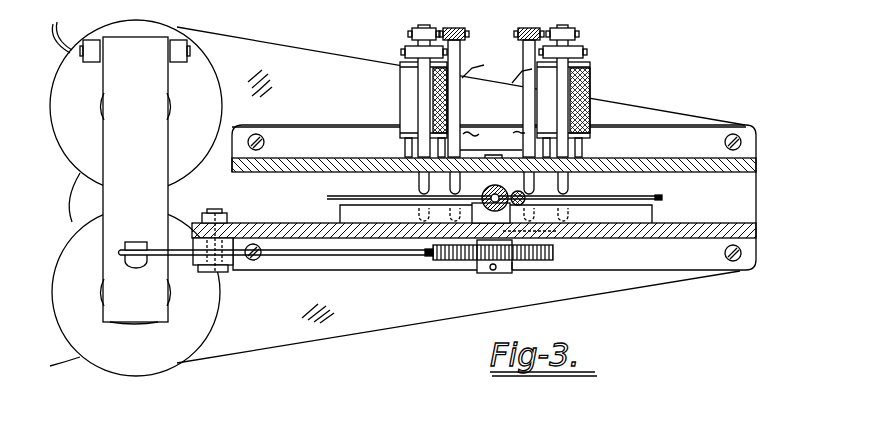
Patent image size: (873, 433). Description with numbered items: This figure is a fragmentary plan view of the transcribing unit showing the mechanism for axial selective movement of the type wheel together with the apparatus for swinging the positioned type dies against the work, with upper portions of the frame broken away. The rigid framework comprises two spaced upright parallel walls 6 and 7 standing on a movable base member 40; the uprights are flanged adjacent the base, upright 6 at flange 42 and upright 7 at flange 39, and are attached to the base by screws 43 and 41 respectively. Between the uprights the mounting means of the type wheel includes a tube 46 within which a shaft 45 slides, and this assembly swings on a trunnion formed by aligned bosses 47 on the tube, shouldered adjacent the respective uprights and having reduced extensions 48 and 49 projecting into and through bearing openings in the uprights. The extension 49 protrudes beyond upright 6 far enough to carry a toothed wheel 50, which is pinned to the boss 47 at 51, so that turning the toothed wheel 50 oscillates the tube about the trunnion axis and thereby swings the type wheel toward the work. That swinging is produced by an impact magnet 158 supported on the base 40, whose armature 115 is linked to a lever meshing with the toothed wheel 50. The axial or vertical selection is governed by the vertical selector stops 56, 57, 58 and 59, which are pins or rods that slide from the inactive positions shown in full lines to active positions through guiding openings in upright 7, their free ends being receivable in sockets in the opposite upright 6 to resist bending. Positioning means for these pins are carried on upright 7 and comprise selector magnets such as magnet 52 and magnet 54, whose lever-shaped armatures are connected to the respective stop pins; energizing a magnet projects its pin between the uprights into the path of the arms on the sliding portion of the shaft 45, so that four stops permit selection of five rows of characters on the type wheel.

The impact magnet 158 is at (133, 25).
The armature 115 is at (163, 142).
The base member 40 is at (297, 63).
The screws 41 is at (258, 137).
The flange 42 is at (612, 265).
The screws 43 is at (254, 261).
The upright wall 7 is at (757, 164).
The upright wall 6 is at (742, 231).
The flange 39 is at (636, 131).
The magnet 52 is at (400, 93).
The magnet 54 is at (588, 93).
The vertical selector stop 56 is at (565, 183).
The vertical selector stop 57 is at (419, 183).
The vertical selector stop 58 is at (456, 185).
The vertical selector stop 59 is at (531, 183).
The shaft 45 is at (486, 191).
The tube 46 is at (497, 175).
The reduced extension 48 is at (502, 160).
The reduced extension 49 is at (553, 233).
The bosses 47 is at (497, 273).
The toothed wheel 50 is at (511, 269).
The pin 51 is at (487, 268).